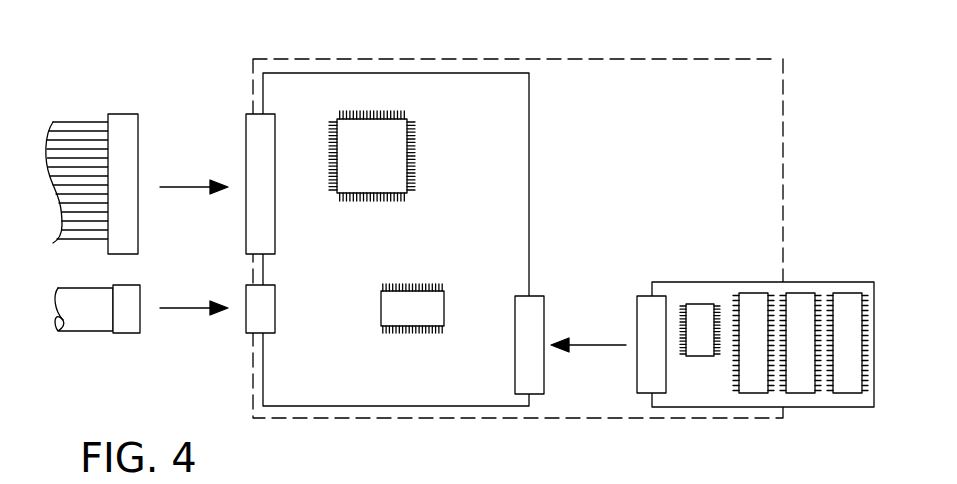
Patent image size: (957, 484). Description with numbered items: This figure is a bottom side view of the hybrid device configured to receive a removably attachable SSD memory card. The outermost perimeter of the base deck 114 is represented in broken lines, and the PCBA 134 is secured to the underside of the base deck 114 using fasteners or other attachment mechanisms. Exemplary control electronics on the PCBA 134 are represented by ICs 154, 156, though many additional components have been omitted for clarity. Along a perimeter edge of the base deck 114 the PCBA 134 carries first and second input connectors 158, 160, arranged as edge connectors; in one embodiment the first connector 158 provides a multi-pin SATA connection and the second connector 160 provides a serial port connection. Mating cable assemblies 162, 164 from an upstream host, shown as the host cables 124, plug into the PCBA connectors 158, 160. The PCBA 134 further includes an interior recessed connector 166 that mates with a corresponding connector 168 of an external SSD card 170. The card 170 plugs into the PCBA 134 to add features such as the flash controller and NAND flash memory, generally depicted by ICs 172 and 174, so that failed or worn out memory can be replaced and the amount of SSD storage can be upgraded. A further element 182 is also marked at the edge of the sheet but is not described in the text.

The base deck 114 is at (666, 59).
The host cables 124 is at (155, 38).
The PCBA 134 is at (296, 72).
The IC 154 is at (378, 138).
The IC 156 is at (393, 308).
The first input connector 158 is at (246, 133).
The second input connector 160 is at (246, 321).
The mating cable assembly 162 is at (138, 138).
The mating cable assembly 164 is at (140, 322).
The interior recessed connector 166 is at (544, 312).
The connector 168 is at (637, 313).
The external SSD card 170 is at (703, 408).
The IC 172 is at (698, 315).
The IC 174 is at (740, 338).
The unidentified (clipped) element 182 is at (566, 480).